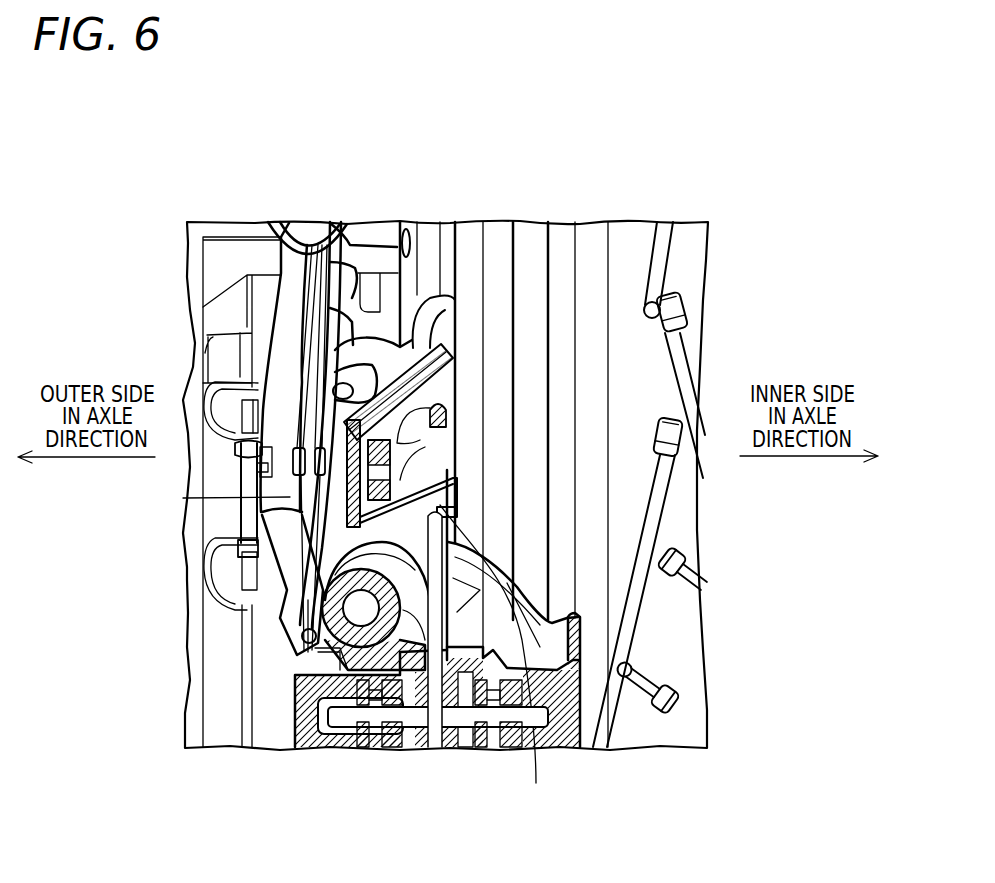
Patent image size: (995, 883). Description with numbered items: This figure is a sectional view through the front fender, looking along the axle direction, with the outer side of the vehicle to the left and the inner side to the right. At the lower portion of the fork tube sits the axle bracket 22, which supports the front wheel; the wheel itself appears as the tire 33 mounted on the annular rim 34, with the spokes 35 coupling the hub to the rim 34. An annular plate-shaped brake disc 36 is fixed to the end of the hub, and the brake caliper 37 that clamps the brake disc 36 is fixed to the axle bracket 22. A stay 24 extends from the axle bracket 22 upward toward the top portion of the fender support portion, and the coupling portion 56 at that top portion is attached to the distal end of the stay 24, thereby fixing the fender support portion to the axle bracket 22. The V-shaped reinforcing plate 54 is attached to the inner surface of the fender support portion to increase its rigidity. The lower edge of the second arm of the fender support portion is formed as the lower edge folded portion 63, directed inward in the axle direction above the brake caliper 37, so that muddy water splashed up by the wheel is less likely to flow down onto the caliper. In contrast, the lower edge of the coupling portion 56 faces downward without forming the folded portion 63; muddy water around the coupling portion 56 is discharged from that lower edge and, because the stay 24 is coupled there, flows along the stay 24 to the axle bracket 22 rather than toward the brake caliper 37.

The axle bracket 22 is at (203, 632).
The stay 24 is at (418, 472).
The tire 33 is at (535, 233).
The rim 34 is at (601, 233).
The spokes 35 is at (681, 360).
The brake disc 36 is at (434, 748).
The brake caliper 37 is at (571, 748).
The reinforcing plate 54 is at (418, 446).
The coupling portion 56 is at (298, 500).
The lower edge folded portion 63 is at (453, 746).